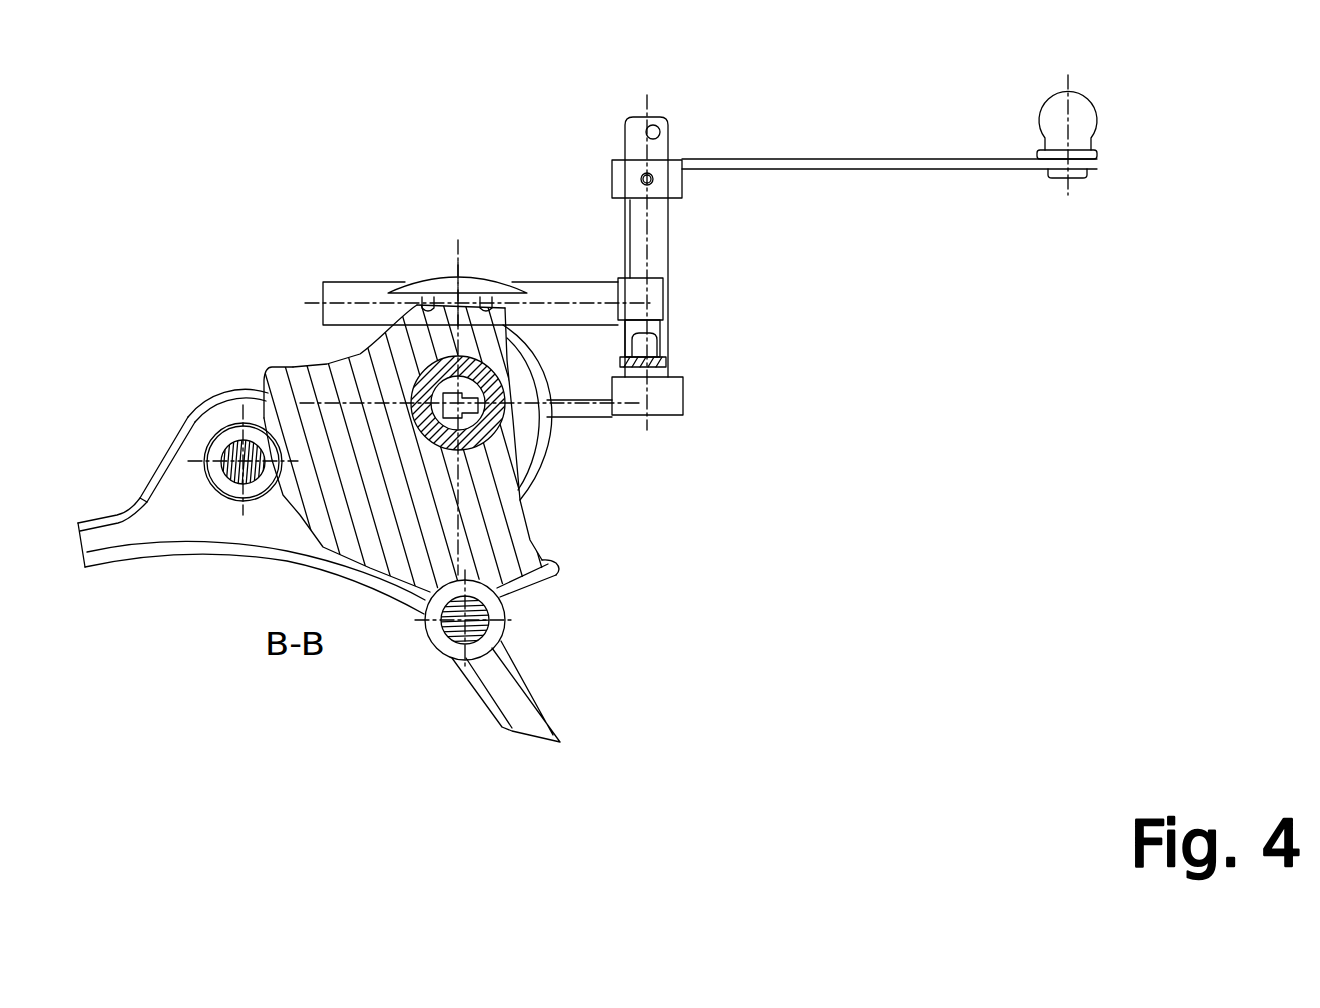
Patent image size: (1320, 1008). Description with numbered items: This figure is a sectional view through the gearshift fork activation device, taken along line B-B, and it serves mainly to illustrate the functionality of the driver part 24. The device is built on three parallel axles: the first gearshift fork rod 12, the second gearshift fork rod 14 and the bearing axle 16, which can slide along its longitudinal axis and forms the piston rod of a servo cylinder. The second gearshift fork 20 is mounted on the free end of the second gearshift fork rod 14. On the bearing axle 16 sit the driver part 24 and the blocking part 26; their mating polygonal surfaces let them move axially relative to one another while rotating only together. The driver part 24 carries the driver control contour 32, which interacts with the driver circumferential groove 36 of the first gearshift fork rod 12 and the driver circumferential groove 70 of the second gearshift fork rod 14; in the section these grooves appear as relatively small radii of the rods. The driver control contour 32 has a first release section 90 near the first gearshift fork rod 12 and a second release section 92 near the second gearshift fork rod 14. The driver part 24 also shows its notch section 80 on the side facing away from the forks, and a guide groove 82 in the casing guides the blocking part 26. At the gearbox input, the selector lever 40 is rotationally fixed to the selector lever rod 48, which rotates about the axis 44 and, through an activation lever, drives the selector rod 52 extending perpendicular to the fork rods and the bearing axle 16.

The first gearshift fork rod 12 is at (505, 637).
The second gearshift fork rod 14 is at (203, 445).
The bearing axle 16 is at (503, 378).
The second gearshift fork 20 is at (130, 500).
The driver part 24 is at (518, 527).
The blocking part 26 is at (525, 587).
The driver control contour 32 is at (323, 547).
The driver circumferential groove 36 is at (507, 623).
The selector lever 40 is at (917, 158).
The axis 44 is at (652, 105).
The selector lever rod 48 is at (670, 220).
The selector rod 52 is at (588, 280).
The driver circumferential groove 70 is at (243, 440).
The notch section 80 is at (440, 300).
The guide groove 82 is at (470, 278).
The first release section 90 is at (556, 561).
The second release section 92 is at (265, 378).